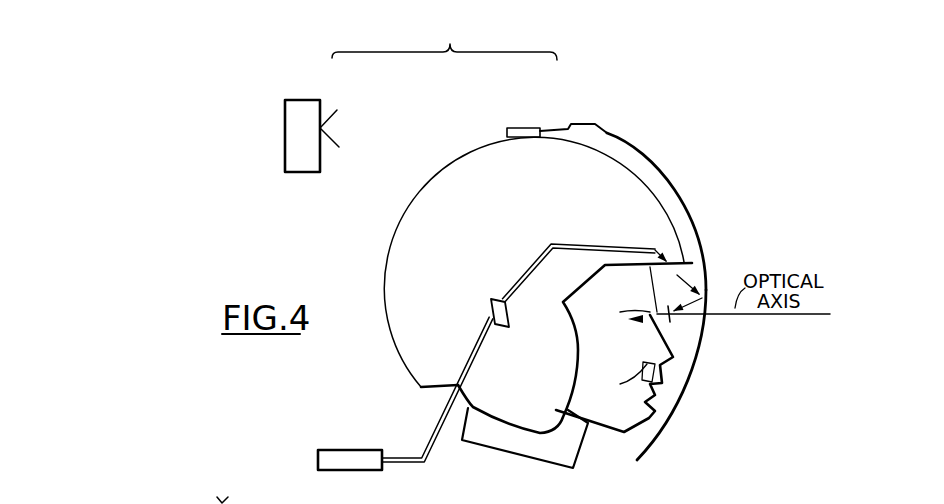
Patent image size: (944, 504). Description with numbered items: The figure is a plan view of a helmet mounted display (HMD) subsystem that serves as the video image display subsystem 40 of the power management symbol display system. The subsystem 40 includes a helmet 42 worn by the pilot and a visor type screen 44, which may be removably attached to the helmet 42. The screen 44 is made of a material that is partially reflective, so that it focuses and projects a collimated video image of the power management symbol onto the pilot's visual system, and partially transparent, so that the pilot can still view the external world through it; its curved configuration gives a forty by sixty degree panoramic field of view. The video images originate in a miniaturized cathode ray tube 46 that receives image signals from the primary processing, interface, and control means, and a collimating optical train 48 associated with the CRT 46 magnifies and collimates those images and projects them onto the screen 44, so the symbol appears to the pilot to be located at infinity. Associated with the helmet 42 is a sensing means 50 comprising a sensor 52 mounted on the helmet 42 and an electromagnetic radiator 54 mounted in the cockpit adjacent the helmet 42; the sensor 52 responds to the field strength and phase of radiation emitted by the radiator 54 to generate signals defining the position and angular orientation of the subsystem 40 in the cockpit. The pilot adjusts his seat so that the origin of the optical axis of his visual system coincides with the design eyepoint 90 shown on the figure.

The video image display subsystem 40 is at (668, 128).
The helmet 42 is at (460, 155).
The visor type screen 44 is at (707, 277).
The cathode ray tube 46 is at (342, 448).
The collimating optical train 48 is at (470, 345).
The sensing means 50 is at (444, 37).
The sensor 52 is at (527, 115).
The electromagnetic radiator 54 is at (314, 144).
The design eyepoint 90 is at (671, 319).